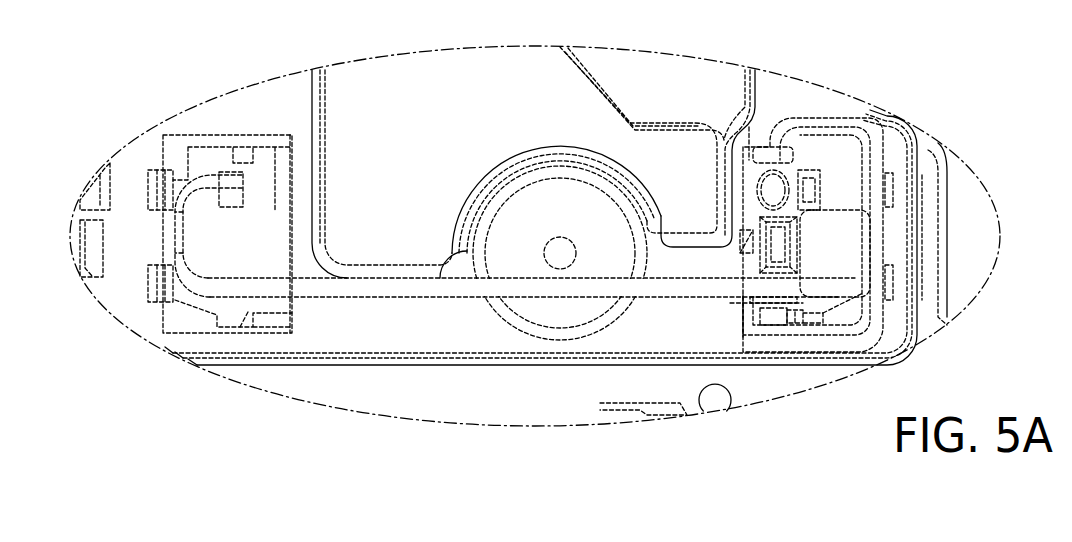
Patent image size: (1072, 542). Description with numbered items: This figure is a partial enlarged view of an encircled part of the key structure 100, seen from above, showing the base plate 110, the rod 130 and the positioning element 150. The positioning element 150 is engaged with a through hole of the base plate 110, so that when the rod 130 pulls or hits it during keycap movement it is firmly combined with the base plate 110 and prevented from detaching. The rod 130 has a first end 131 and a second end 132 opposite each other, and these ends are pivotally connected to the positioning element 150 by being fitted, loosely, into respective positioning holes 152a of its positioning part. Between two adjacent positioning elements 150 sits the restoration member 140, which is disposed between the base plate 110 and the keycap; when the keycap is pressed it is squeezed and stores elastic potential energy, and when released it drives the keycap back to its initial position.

The key structure 100 is at (100, 0).
The base plate 110 is at (927, 222).
The rod 130 is at (870, 110).
The first end 131 is at (783, 147).
The second end 132 is at (253, 187).
The restoration member 140 is at (568, 213).
The positioning element 150 is at (860, 243).
The positioning hole 152a is at (227, 173).